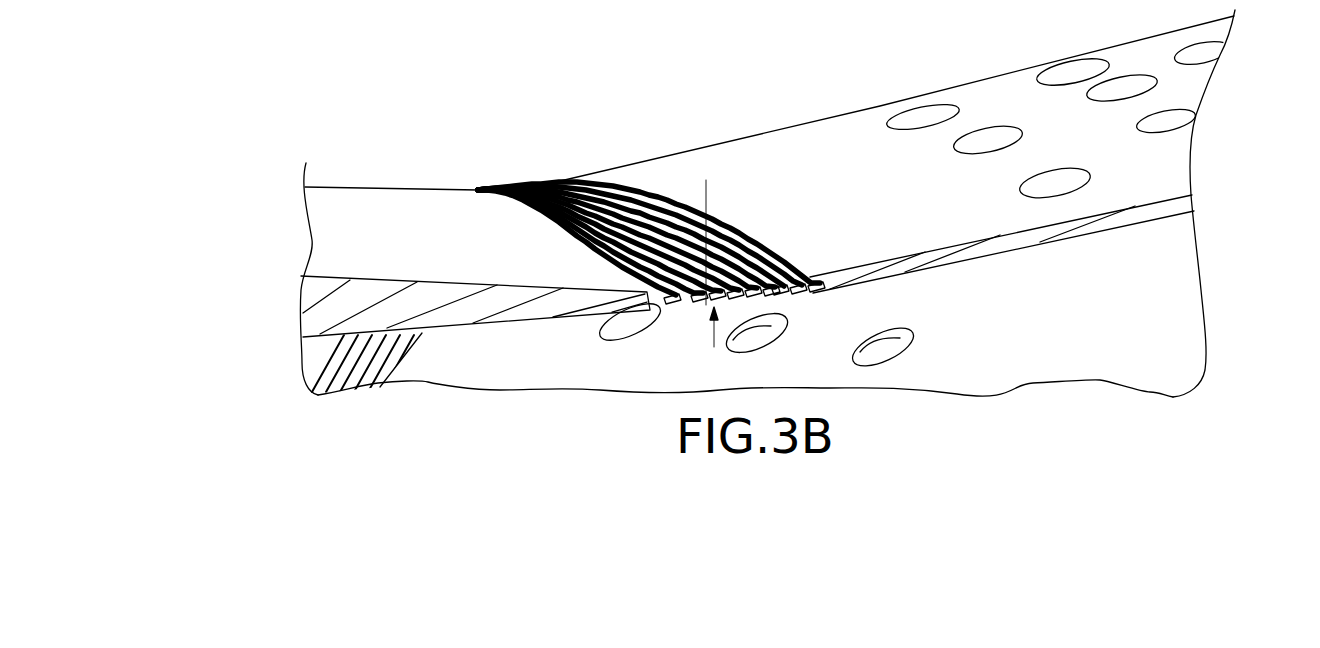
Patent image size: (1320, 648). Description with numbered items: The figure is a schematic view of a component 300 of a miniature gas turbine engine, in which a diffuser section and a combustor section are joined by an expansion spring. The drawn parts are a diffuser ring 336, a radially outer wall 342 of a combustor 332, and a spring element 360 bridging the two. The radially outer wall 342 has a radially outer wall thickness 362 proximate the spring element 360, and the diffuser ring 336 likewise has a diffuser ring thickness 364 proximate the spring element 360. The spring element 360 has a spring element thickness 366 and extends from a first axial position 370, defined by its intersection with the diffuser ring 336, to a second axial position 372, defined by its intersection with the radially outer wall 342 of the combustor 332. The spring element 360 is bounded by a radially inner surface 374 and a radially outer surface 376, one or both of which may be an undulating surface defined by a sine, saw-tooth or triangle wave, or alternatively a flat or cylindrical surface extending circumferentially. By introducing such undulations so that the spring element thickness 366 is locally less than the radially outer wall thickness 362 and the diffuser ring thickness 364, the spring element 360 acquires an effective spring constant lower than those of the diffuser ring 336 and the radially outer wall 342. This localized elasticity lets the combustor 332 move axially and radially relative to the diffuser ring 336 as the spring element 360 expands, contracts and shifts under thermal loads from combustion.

The component 300 is at (224, 169).
The combustor 332 is at (1175, 175).
The diffuser ring 336 is at (342, 242).
The radially outer wall 342 is at (758, 132).
The spring element 360 is at (547, 180).
The radially outer wall thickness 362 is at (853, 323).
The diffuser ring thickness 364 is at (598, 347).
The spring element thickness 366 is at (707, 202).
The first axial position 370 is at (514, 207).
The second axial position 372 is at (660, 188).
The radially inner surface 374 is at (677, 308).
The radially outer surface 376 is at (767, 247).